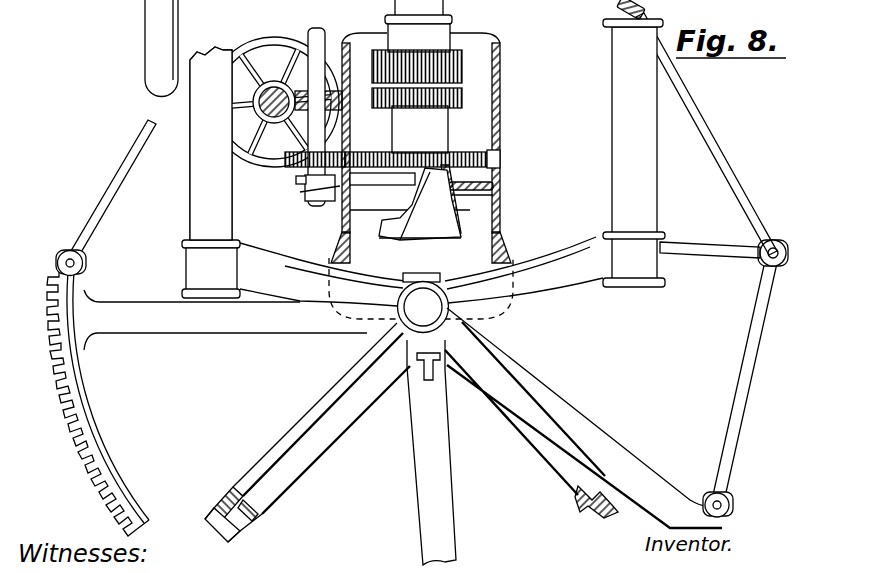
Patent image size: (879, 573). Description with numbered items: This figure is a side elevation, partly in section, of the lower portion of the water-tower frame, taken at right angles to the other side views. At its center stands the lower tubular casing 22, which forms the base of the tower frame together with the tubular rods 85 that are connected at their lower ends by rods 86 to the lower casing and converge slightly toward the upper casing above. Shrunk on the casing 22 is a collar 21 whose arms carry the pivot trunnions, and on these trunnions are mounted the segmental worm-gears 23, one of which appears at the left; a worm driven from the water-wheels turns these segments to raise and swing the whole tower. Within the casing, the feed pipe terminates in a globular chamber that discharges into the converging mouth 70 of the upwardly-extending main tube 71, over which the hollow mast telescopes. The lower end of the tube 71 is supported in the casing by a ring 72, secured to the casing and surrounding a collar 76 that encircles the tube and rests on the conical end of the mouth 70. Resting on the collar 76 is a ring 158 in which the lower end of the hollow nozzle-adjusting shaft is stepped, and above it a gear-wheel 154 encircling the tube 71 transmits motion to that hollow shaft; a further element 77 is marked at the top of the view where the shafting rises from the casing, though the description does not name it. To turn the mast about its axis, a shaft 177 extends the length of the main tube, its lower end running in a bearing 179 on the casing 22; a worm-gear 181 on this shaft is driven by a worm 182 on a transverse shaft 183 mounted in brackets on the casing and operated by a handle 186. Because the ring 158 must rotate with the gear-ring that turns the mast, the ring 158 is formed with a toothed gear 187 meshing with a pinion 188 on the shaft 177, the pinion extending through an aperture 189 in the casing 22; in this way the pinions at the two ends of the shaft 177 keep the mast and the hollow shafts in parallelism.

The handle 186 is at (149, 12).
The segmental worm-gear 23 is at (77, 447).
The collar 21 is at (513, 250).
The rod 86 is at (570, 292).
The tubular rod 85 is at (655, 160).
The worm 182 is at (279, 38).
The worm-gear 181 is at (297, 88).
The shaft 177 is at (322, 40).
The bearing 179 is at (333, 201).
The pinion 188 is at (300, 184).
The shaft 183 is at (300, 193).
The tubular casing 22 is at (500, 133).
The shaft 77 is at (437, 12).
The gear-wheel 154 is at (378, 108).
The aperture 189 is at (342, 153).
The ring 158 is at (465, 152).
The toothed gear 187 is at (500, 158).
The ring 72 is at (410, 191).
The main tube 71 is at (432, 186).
The collar 76 is at (460, 211).
The converging mouth 70 is at (435, 232).